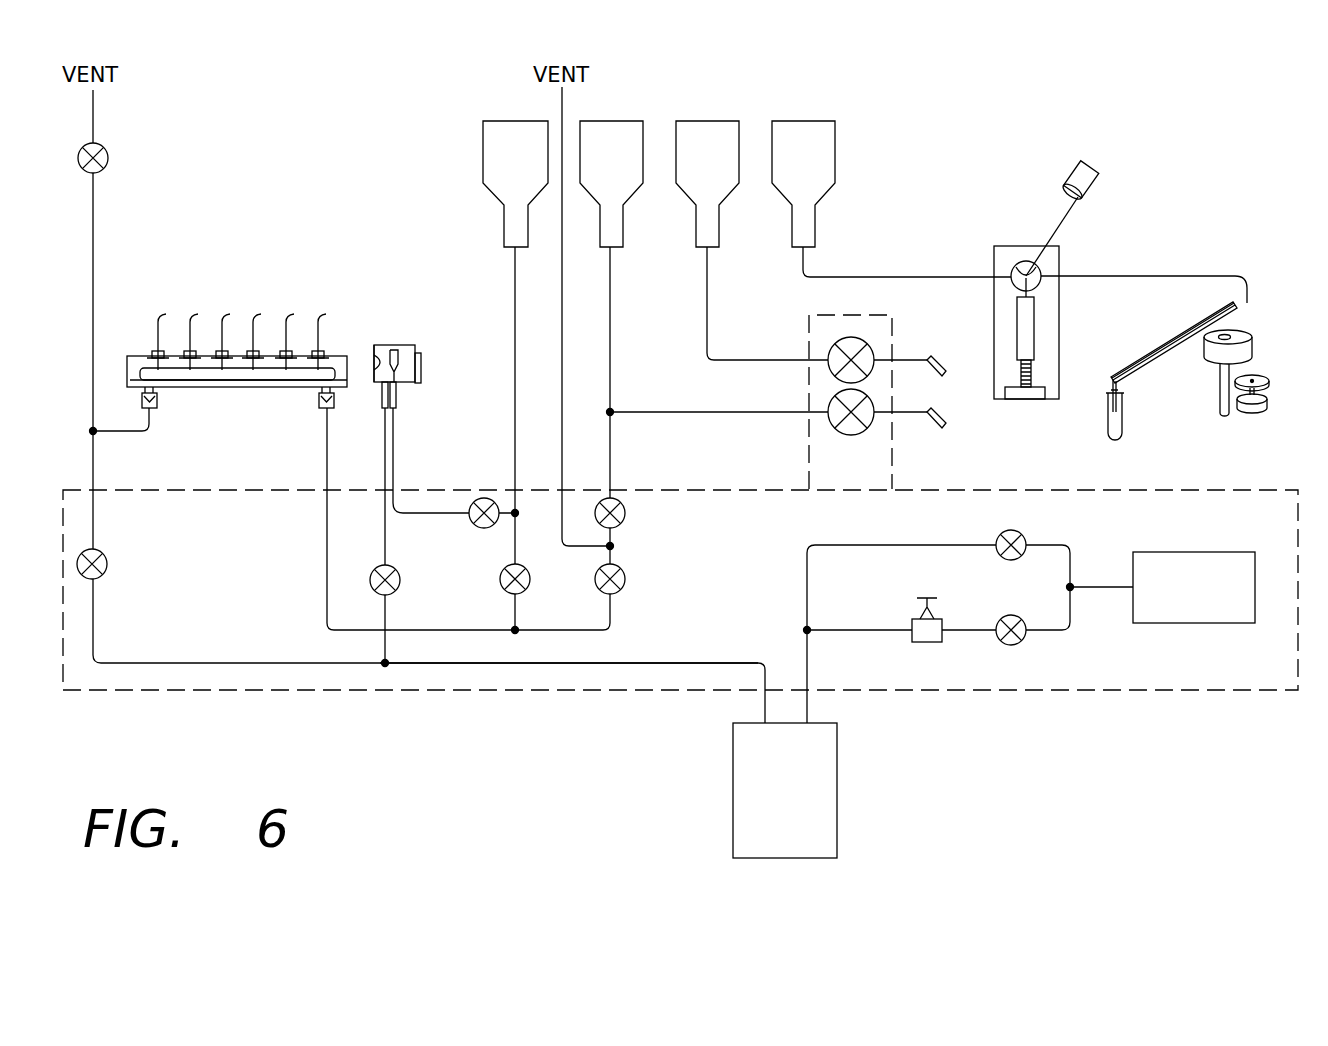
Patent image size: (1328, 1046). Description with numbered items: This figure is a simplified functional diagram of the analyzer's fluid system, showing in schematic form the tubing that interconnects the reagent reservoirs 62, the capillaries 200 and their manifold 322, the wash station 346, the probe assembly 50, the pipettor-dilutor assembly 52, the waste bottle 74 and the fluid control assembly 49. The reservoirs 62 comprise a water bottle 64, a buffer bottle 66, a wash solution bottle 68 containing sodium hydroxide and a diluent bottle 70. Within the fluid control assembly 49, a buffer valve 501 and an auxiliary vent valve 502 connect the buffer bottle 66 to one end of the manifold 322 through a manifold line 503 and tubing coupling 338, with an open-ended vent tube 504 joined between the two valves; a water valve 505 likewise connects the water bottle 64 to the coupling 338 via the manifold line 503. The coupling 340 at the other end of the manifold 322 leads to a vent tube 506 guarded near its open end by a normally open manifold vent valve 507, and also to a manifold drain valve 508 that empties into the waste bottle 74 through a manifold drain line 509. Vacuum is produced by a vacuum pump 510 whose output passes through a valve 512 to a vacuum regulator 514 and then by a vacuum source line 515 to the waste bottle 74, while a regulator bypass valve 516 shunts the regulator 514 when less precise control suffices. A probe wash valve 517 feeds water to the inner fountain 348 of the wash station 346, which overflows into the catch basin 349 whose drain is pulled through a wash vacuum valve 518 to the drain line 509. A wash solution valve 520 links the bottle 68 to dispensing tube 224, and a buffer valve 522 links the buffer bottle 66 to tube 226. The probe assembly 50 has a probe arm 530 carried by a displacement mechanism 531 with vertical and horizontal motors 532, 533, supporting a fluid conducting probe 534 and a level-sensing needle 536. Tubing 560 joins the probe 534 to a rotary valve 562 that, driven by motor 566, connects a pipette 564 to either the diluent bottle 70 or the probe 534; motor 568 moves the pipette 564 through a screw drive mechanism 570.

The fluid control assembly 49 is at (605, 691).
The probe assembly 50 is at (1248, 300).
The pipettor-dilutor assembly 52 is at (1012, 246).
The reagent reservoirs 62 is at (853, 112).
The water bottle 64 is at (492, 187).
The buffer bottle 66 is at (630, 188).
The wash solution bottle 68 is at (726, 188).
The diluent bottle 70 is at (826, 193).
The waste bottle 74 is at (838, 803).
The capillaries 200 is at (150, 340).
The tubing length 224 is at (943, 367).
The tubing length 226 is at (937, 433).
The manifold 322 is at (200, 380).
The tubing coupling 338 is at (320, 407).
The tubing coupling 340 is at (160, 407).
The wash station 346 is at (393, 343).
The fountain 348 is at (404, 360).
The catch basin 349 is at (372, 347).
The buffer valve 501 is at (622, 522).
The auxiliary vent valve 502 is at (622, 588).
The manifold line 503 is at (326, 590).
The vent tube 504 is at (562, 400).
The water valve 505 is at (526, 588).
The vent tube 506 is at (97, 236).
The manifold vent valve 507 is at (108, 159).
The manifold drain valve 508 is at (108, 564).
The manifold drain line 509 is at (668, 663).
The vacuum pump 510 is at (1180, 552).
The valve 512 is at (1019, 643).
The vacuum regulator 514 is at (928, 643).
The vacuum source line 515 is at (805, 590).
The regulator bypass valve 516 is at (1020, 532).
The probe wash valve 517 is at (478, 526).
The wash vacuum valve 518 is at (400, 580).
The wash solution valve 520 is at (866, 343).
The buffer valve 522 is at (832, 420).
The probe arm 530 is at (1190, 331).
The displacement mechanism 531 is at (1264, 373).
The vertical displacement motor 532 is at (1250, 342).
The horizontal displacement motor 533 is at (1250, 413).
The fluid conducting probe 534 is at (1106, 414).
The needle 536 is at (1119, 400).
The fluid carrying tubing 560 is at (1218, 276).
The rotary valve 562 is at (1040, 268).
The pipette 564 is at (1034, 340).
The motor 566 is at (1072, 172).
The motor 568 is at (1022, 400).
The screw drive mechanism 570 is at (1031, 372).